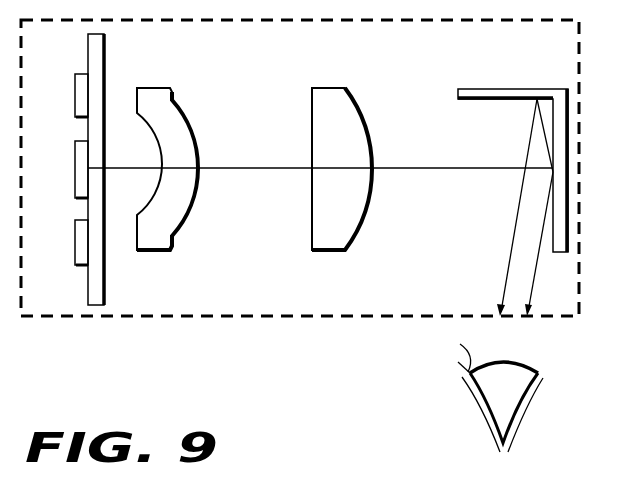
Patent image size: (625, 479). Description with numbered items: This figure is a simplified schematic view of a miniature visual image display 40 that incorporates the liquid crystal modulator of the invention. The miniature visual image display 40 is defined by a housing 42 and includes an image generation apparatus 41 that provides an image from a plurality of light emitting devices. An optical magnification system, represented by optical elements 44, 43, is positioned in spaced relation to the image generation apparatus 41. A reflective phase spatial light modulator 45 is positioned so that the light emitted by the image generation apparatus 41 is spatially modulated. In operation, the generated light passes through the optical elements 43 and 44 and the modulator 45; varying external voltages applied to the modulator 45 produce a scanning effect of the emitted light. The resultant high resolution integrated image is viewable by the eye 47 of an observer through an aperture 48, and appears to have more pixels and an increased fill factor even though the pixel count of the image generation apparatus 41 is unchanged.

The miniature visual image display 40 is at (320, 430).
The image generation apparatus 41 is at (75, 162).
The housing 42 is at (262, 290).
The optical element 43 is at (367, 131).
The optical element 44 is at (194, 138).
The reflective phase spatial light modulator 45 is at (501, 88).
The eye 47 is at (477, 416).
The aperture 48 is at (523, 400).